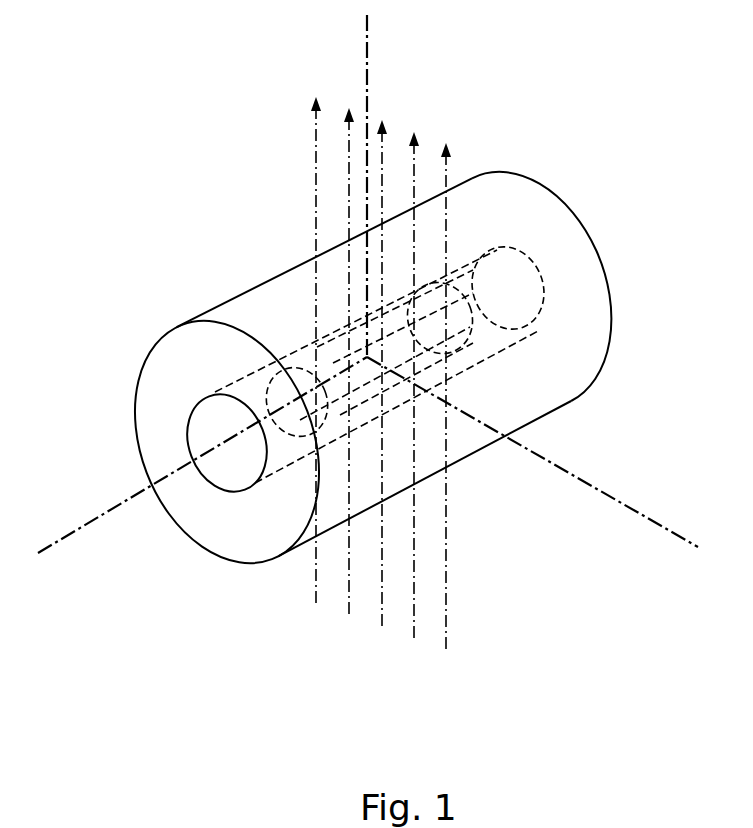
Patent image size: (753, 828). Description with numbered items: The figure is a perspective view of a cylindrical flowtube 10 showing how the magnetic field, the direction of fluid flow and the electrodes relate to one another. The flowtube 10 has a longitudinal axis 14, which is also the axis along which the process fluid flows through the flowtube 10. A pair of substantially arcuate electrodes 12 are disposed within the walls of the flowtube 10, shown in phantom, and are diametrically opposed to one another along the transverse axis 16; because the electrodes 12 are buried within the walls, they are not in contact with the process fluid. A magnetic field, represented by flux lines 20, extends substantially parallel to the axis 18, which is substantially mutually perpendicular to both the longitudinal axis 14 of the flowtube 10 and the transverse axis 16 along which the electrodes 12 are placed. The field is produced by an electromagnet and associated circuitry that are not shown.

The flowtube 10 is at (516, 200).
The electrodes 12 is at (470, 343).
The longitudinal axis 14 is at (86, 526).
The transverse axis 16 is at (669, 530).
The axis 18 is at (369, 25).
The flux lines 20 is at (347, 630).